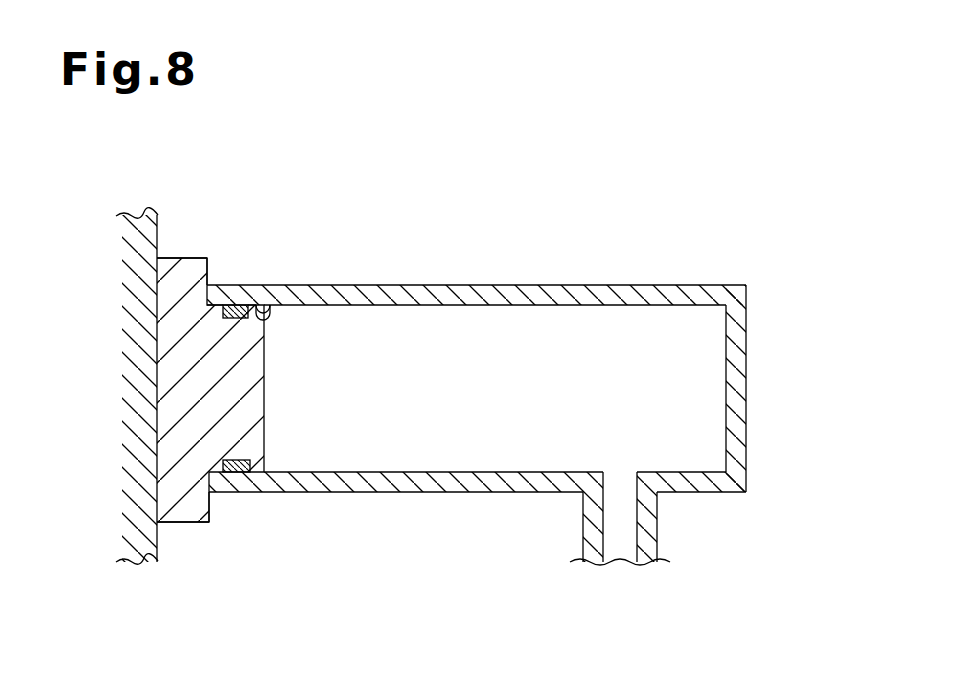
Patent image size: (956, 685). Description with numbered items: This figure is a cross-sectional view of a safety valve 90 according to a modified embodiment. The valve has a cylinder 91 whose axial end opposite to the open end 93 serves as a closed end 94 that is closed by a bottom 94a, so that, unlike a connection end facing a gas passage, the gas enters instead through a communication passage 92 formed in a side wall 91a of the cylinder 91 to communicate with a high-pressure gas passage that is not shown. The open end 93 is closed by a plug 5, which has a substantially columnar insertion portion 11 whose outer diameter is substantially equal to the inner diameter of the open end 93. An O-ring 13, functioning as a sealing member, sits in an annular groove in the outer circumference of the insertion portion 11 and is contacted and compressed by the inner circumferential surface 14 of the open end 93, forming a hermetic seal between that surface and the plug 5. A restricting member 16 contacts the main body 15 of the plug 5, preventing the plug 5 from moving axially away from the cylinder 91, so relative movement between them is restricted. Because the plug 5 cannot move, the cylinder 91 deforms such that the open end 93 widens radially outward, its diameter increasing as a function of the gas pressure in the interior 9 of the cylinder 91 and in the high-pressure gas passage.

The plug 5 is at (183, 523).
The interior 9 is at (505, 402).
The insertion portion 11 is at (253, 365).
The O-ring 13 is at (249, 494).
The inner circumferential surface 14 is at (261, 304).
The main body 15 is at (185, 267).
The restricting member 16 is at (135, 219).
The safety valve 90 is at (514, 337).
The cylinder 91 is at (478, 283).
The side wall 91a is at (539, 493).
The communication passage 92 is at (640, 529).
The open end 93 is at (221, 298).
The closed end 94 is at (733, 295).
The bottom 94a is at (737, 391).